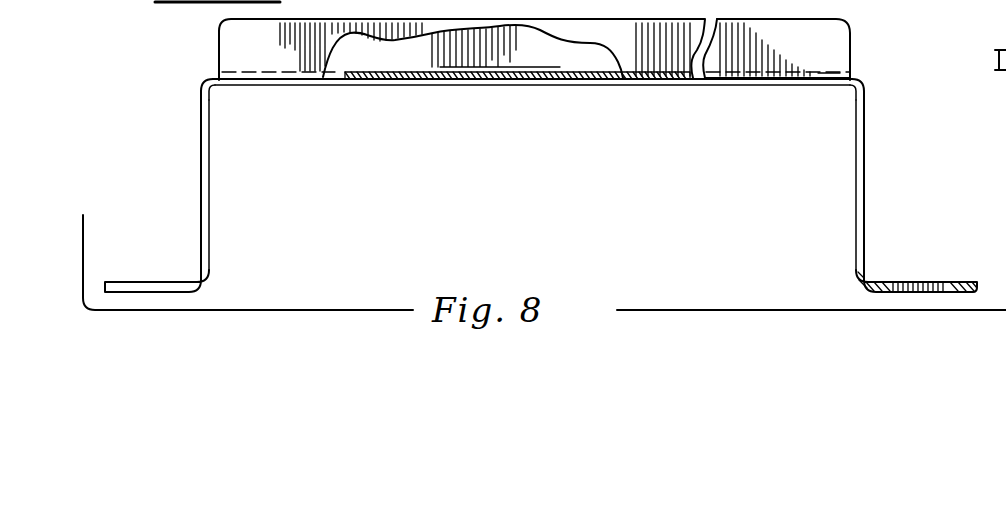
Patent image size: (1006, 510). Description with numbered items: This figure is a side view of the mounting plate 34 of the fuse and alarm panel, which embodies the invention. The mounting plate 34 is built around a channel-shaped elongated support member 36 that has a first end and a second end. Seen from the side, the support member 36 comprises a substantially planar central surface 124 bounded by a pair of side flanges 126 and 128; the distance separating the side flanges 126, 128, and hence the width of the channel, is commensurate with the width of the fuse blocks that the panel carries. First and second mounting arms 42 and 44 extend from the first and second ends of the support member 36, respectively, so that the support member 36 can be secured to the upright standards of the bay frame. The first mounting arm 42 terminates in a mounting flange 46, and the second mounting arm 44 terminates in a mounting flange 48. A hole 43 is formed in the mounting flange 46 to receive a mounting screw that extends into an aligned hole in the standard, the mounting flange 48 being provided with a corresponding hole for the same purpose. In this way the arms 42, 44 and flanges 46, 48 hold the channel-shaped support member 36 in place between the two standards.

The side flange 128 is at (228, 52).
The side flange 126 is at (485, 53).
The central surface 124 is at (540, 80).
The support member 36 is at (415, 84).
The mounting plate 34 is at (868, 72).
The second mounting arm 44 is at (200, 160).
The first mounting arm 42 is at (866, 155).
The mounting flange 48 is at (152, 282).
The mounting flange 46 is at (960, 281).
The hole 43 is at (920, 282).